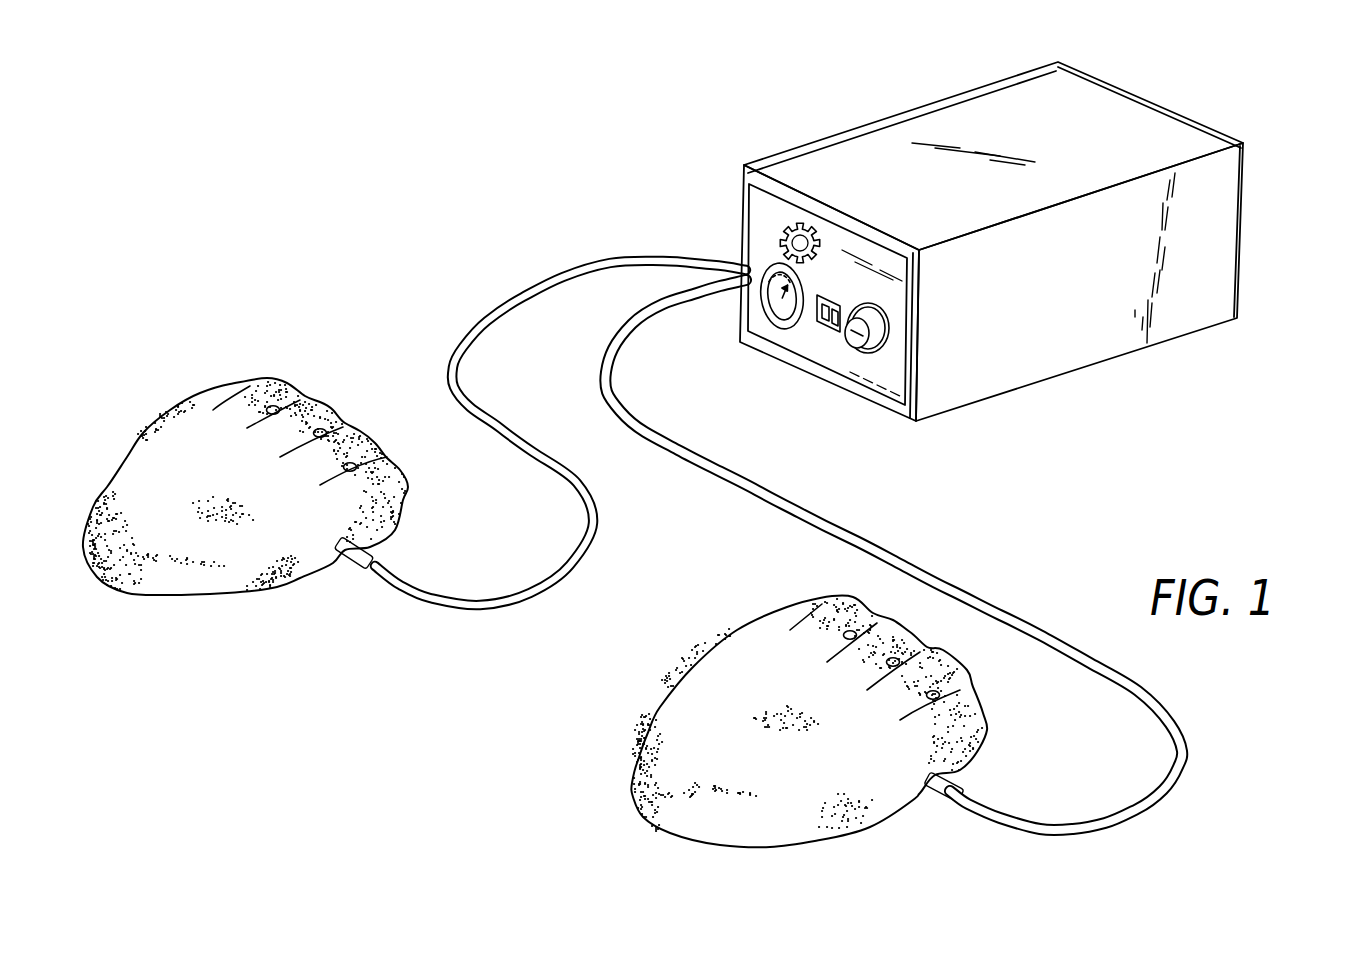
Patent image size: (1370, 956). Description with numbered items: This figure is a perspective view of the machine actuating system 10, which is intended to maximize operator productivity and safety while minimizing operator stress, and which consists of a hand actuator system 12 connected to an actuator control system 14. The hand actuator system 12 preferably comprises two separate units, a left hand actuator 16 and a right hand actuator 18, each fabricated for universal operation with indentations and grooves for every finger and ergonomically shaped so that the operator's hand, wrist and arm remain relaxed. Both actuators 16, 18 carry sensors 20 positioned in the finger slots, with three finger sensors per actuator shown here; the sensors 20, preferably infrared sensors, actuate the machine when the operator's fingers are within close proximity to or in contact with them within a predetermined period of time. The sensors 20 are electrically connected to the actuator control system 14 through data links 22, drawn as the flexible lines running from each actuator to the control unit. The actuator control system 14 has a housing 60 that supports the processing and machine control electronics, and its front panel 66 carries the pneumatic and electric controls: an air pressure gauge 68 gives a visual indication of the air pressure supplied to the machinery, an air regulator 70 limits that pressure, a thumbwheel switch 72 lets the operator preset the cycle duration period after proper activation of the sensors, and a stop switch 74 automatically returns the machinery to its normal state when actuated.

The machine actuating system 10 is at (507, 137).
The hand actuator system 12 is at (295, 650).
The actuator control system 14 is at (1243, 120).
The left hand actuator 16 is at (163, 597).
The right hand actuator 18 is at (887, 825).
The sensors 20 is at (337, 417).
The data links 22 is at (595, 540).
The housing 60 is at (1097, 338).
The front panel 66 is at (893, 352).
The air pressure gauge 68 is at (776, 310).
The air regulator 70 is at (790, 228).
The thumbwheel switch 72 is at (824, 327).
The stop switch 74 is at (850, 352).